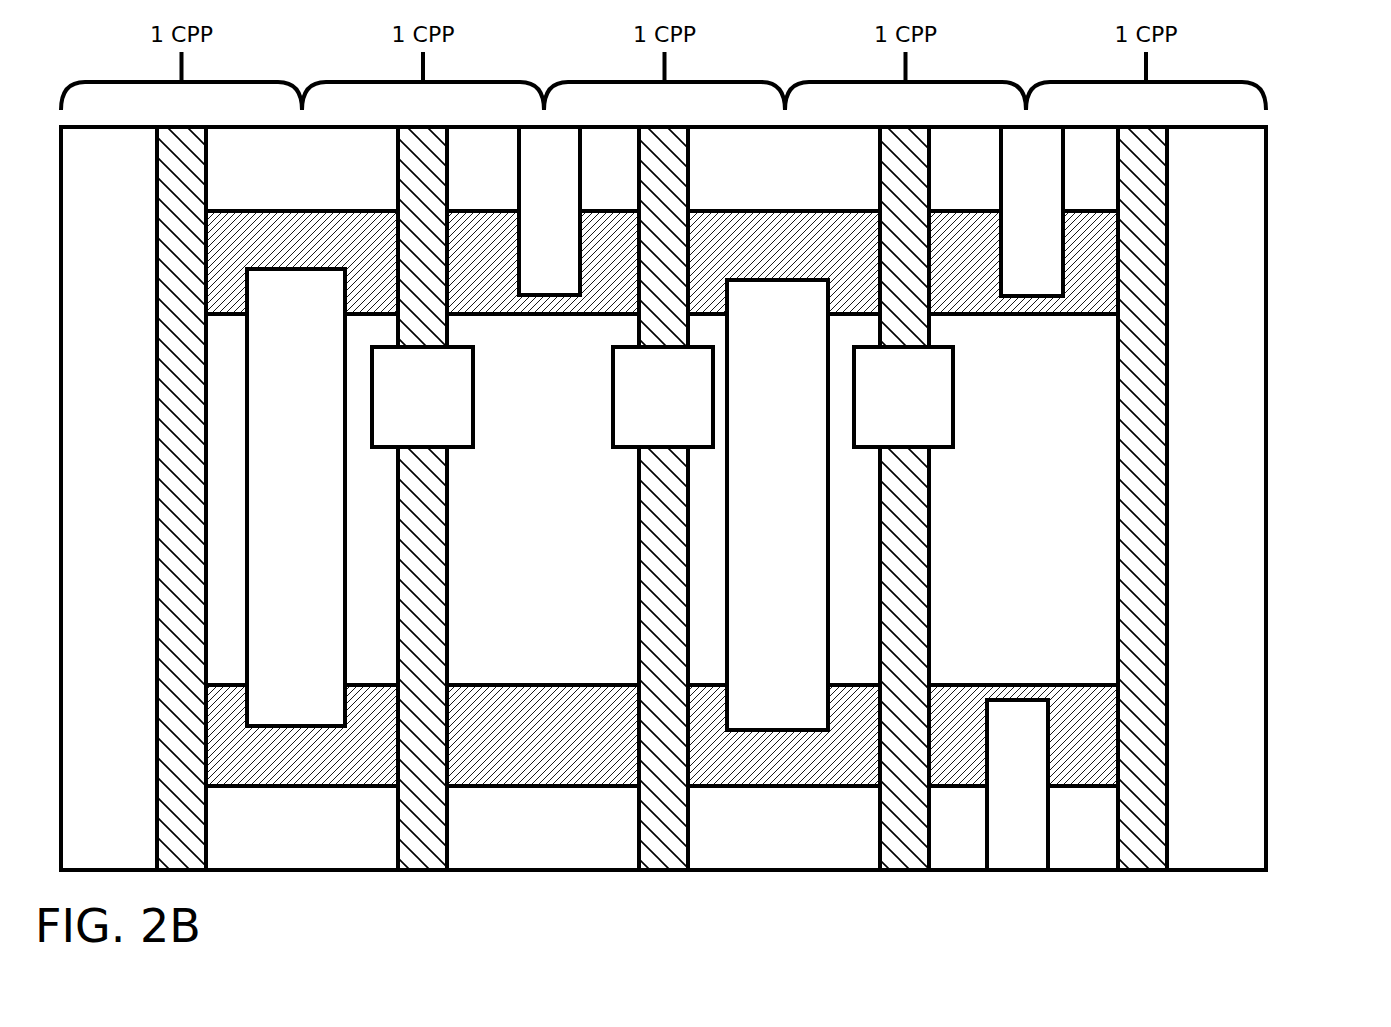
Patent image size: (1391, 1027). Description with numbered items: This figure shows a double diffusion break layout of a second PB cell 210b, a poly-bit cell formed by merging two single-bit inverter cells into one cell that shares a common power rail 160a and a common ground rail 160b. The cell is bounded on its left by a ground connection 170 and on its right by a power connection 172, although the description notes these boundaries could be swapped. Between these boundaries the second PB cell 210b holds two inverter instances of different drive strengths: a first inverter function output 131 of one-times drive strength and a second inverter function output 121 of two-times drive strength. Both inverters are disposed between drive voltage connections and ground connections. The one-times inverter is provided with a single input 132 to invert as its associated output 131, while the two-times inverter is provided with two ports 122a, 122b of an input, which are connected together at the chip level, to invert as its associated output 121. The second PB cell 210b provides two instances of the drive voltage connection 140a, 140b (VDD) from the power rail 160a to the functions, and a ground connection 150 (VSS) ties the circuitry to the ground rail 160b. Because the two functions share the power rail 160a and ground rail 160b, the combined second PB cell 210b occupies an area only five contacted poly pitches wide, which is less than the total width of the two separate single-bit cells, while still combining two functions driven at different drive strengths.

The second PB cell 210b is at (1283, 239).
The power rail 160a is at (318, 211).
The ground rail 160b is at (577, 684).
The ground connection 170 is at (156, 495).
The power connection 172 is at (1153, 462).
The inverter function output 131 is at (277, 509).
The inverter function output 121 is at (758, 509).
The input 132 is at (403, 411).
The first port of input 122a is at (638, 411).
The second port of input 122b is at (879, 411).
The drive voltage connection 140a is at (555, 212).
The drive voltage connection 140b is at (1042, 213).
The ground connection 150 is at (1018, 851).